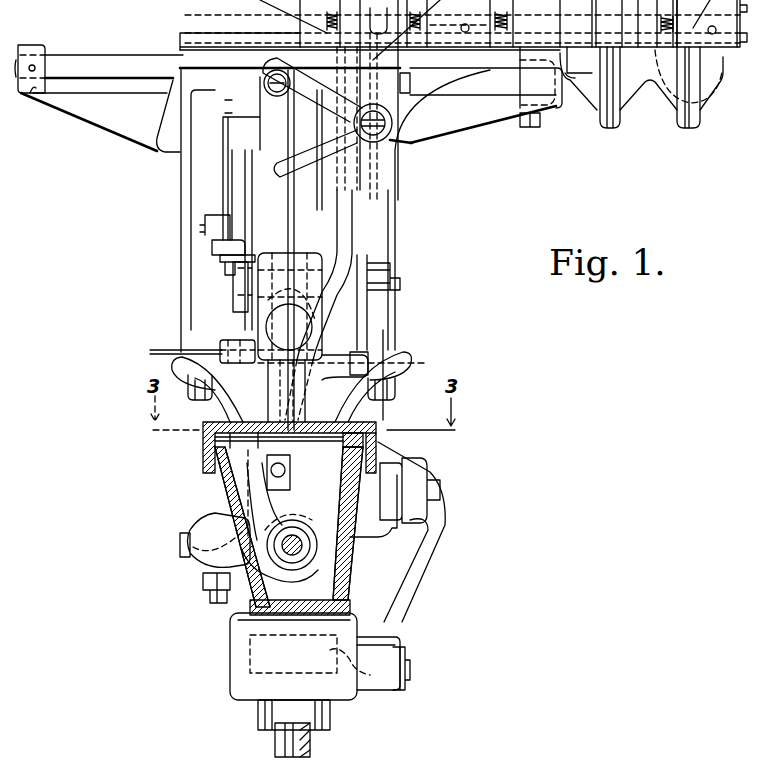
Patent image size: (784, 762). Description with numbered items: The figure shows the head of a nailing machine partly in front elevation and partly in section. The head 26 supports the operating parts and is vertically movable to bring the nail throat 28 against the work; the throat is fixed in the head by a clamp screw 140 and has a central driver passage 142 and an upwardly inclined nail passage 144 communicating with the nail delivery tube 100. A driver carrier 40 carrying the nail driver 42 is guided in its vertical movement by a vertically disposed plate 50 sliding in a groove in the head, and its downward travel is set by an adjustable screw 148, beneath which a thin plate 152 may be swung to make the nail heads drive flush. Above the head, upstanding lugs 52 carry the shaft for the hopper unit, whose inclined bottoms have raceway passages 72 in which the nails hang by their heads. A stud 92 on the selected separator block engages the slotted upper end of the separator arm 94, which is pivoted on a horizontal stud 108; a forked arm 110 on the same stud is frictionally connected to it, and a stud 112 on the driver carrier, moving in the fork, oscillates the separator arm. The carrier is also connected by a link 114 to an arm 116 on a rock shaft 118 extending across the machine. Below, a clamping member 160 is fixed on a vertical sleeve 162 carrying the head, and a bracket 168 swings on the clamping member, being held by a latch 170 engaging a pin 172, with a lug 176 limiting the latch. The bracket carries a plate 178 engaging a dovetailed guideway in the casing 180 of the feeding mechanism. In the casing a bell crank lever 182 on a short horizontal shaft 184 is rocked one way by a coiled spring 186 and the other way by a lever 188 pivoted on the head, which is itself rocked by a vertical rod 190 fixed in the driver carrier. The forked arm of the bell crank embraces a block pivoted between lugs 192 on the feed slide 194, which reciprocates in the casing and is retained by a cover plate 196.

The head 26 is at (207, 273).
The nail throat 28 is at (170, 360).
The driver carrier 40 is at (270, 133).
The nail driver 42 is at (300, 200).
The vertically disposed plate 50 is at (405, 146).
The upstanding lugs 52 is at (35, 90).
The raceway passages 72 is at (533, 118).
The stud 92 is at (714, 34).
The separator arm 94 is at (128, 65).
The nail delivery tube 100 is at (345, 226).
The horizontal stud 108 is at (385, 121).
The forked arm 110 is at (350, 150).
The stud 112 is at (264, 83).
The link 114 is at (225, 170).
The arm 116 is at (247, 260).
The rock shaft 118 is at (247, 285).
The clamp screw 140 is at (302, 327).
The driver passage 142 is at (392, 267).
The nail passage 144 is at (420, 364).
The adjustable screw 148 is at (220, 255).
The thin plate 152 is at (163, 348).
The clamping member 160 is at (250, 653).
The vertical sleeve 162 is at (317, 705).
The bracket 168 is at (407, 558).
The latch 170 is at (397, 687).
The pin 172 is at (410, 663).
The lug 176 is at (383, 640).
The plate 178 is at (387, 490).
The casing 180 is at (382, 530).
The bell crank lever 182 is at (262, 490).
The short horizontal shaft 184 is at (283, 547).
The coiled spring 186 is at (320, 573).
The lever 188 is at (215, 580).
The vertical rod 190 is at (232, 408).
The lugs 192 is at (290, 457).
The feed slide 194 is at (223, 440).
The cover plate 196 is at (360, 426).